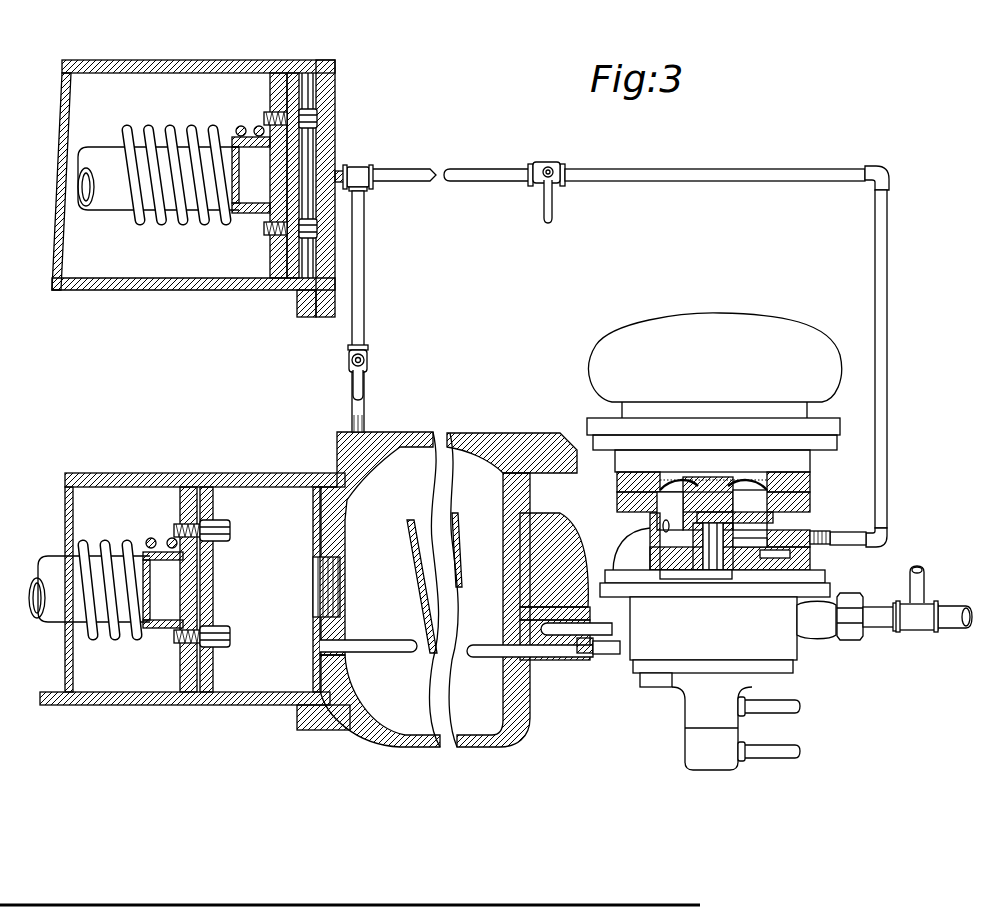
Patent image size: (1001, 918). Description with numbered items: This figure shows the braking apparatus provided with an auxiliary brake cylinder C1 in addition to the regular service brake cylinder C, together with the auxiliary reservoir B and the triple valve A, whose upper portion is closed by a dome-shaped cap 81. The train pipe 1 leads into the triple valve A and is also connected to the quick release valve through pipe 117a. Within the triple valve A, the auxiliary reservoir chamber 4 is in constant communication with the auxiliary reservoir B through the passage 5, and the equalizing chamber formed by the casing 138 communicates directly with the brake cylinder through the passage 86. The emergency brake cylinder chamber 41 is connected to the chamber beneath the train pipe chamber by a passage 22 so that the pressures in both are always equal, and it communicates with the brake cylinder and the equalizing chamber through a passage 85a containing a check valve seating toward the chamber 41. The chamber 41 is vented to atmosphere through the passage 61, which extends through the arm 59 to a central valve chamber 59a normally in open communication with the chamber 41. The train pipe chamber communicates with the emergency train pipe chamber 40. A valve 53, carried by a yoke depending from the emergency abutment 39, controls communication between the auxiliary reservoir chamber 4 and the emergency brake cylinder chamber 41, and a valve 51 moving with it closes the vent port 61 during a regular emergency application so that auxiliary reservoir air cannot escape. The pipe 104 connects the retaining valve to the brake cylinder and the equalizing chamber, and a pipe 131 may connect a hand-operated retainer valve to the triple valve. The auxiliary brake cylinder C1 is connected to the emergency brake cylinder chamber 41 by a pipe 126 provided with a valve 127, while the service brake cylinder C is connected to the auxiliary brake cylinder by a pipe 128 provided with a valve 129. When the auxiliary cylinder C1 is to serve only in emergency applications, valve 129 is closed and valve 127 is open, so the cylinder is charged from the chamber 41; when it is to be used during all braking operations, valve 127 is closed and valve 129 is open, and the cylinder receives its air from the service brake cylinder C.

The auxiliary brake cylinder C1 is at (178, 83).
The service brake cylinder C is at (183, 473).
The auxiliary reservoir B is at (510, 733).
The triple valve A is at (773, 543).
The dome cap 81 is at (810, 350).
The emergency train pipe chamber 40 is at (745, 480).
The emergency brake cylinder chamber 41 is at (668, 513).
The passage 85a is at (648, 528).
The emergency abutment 39 is at (670, 511).
The arm 59 is at (750, 510).
The valve 53 is at (694, 556).
The passage 61 is at (777, 518).
The central valve chamber 59a is at (757, 537).
The passage 22 is at (733, 542).
The valve 51 is at (777, 556).
The auxiliary reservoir chamber 4 is at (679, 585).
The passage 5 is at (548, 610).
The passage 86 is at (575, 668).
The train pipe 1 is at (812, 625).
The casing 138 is at (693, 712).
The pipe 104 is at (781, 708).
The pipe 131 is at (772, 757).
The pipe 117a is at (918, 582).
The pipe 126 is at (888, 332).
The valve 127 is at (548, 163).
The pipe 128 is at (362, 311).
The valve 129 is at (347, 368).